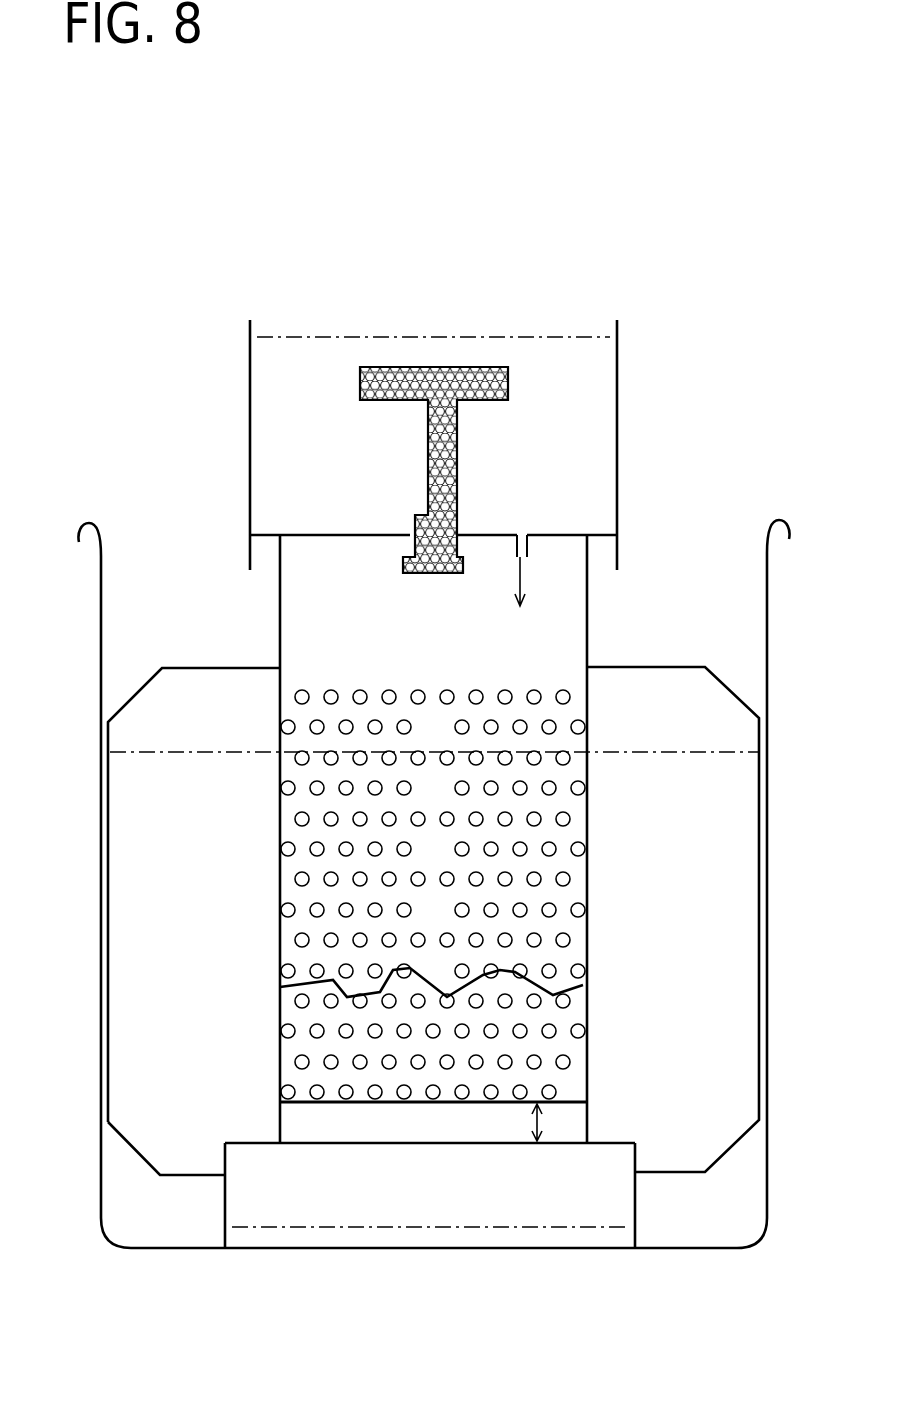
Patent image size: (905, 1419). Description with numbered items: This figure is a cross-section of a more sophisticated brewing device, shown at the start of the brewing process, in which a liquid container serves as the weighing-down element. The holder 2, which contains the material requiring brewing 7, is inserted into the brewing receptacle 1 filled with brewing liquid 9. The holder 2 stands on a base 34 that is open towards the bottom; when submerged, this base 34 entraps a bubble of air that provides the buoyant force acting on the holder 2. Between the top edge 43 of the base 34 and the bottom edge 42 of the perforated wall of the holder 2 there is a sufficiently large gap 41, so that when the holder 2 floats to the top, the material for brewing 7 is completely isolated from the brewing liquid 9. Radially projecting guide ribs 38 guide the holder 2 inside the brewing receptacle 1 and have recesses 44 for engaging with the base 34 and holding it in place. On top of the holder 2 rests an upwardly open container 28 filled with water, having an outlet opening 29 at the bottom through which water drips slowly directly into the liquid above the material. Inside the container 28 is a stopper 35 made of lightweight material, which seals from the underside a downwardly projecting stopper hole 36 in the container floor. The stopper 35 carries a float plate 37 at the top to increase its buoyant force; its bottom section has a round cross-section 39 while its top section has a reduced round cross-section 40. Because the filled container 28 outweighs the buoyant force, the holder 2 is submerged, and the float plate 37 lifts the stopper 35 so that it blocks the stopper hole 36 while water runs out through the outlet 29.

The brewing receptacle 1 is at (100, 790).
The holder 2 is at (588, 820).
The material requiring brewing 7 is at (296, 1023).
The brewing liquid 9 is at (735, 923).
The container 28 is at (250, 383).
The outlet opening 29 is at (528, 547).
The base 34 is at (225, 1196).
The stopper 35 is at (430, 457).
The stopper hole 36 is at (407, 543).
The float plate 37 is at (390, 368).
The guide ribs 38 is at (133, 925).
The round cross-section 39 is at (440, 533).
The reduced round cross-section 40 is at (447, 433).
The gap 41 is at (553, 1128).
The bottom edge of the perforated wall 42 is at (568, 1097).
The top edge 43 is at (613, 1143).
The recesses 44 is at (247, 1142).